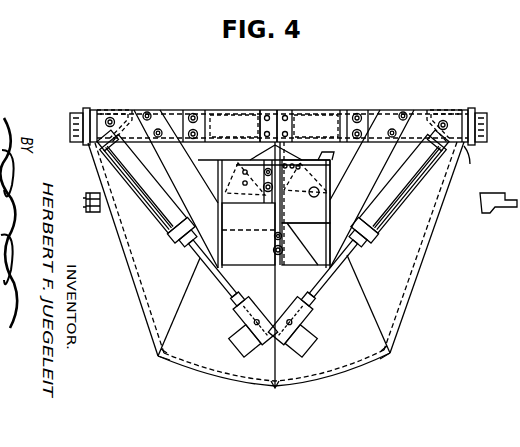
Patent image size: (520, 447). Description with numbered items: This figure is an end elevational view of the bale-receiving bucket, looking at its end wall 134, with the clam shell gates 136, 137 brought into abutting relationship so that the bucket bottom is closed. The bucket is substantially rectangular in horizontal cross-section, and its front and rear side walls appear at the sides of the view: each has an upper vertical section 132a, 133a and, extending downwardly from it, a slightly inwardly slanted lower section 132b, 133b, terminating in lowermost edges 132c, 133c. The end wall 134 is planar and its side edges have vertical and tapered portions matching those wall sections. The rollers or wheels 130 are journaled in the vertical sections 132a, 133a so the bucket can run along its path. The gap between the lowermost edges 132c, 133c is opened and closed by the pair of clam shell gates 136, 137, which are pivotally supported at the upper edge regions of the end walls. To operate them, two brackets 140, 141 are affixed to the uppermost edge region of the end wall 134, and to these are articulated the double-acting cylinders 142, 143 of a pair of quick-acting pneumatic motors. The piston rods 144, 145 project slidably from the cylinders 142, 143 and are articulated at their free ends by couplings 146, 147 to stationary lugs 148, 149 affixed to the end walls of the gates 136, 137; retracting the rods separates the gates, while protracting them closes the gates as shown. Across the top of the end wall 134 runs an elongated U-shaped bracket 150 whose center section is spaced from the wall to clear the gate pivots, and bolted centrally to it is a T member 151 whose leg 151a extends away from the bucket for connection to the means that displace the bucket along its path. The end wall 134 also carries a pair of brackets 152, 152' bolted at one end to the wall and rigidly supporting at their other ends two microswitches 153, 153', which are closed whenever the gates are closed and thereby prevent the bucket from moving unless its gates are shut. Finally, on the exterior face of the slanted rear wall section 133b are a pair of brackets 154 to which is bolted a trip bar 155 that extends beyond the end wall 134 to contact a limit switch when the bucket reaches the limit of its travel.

The rollers or wheels 130 is at (483, 111).
The vertical section of front wall 132a is at (464, 149).
The slanted section of front wall 132b is at (421, 257).
The lowermost edge of front wall 132c is at (375, 358).
The vertical section of rear wall 133a is at (86, 142).
The slanted section of rear wall 133b is at (142, 313).
The lowermost edge of rear wall 133c is at (163, 360).
The end wall 134 is at (404, 284).
The clam shell gate 136 is at (374, 328).
The clam shell gate 137 is at (233, 374).
The bracket 140 is at (437, 110).
The bracket 141 is at (104, 110).
The double-acting cylinder 142 is at (402, 190).
The double-acting cylinder 143 is at (136, 180).
The piston rod 144 is at (342, 268).
The piston rod 145 is at (205, 265).
The coupling 146 is at (308, 313).
The coupling 147 is at (242, 310).
The stationary lug 148 is at (312, 343).
The stationary lug 149 is at (232, 339).
The U-shaped bracket 150 is at (312, 122).
The T member 151 is at (283, 110).
The leg of T member 151a is at (277, 130).
The bracket 152 is at (372, 177).
The bracket 152' is at (174, 173).
The microswitch 153 is at (306, 224).
The microswitch 153' is at (246, 224).
The bracket 154 is at (104, 214).
The trip bar 155 is at (90, 192).